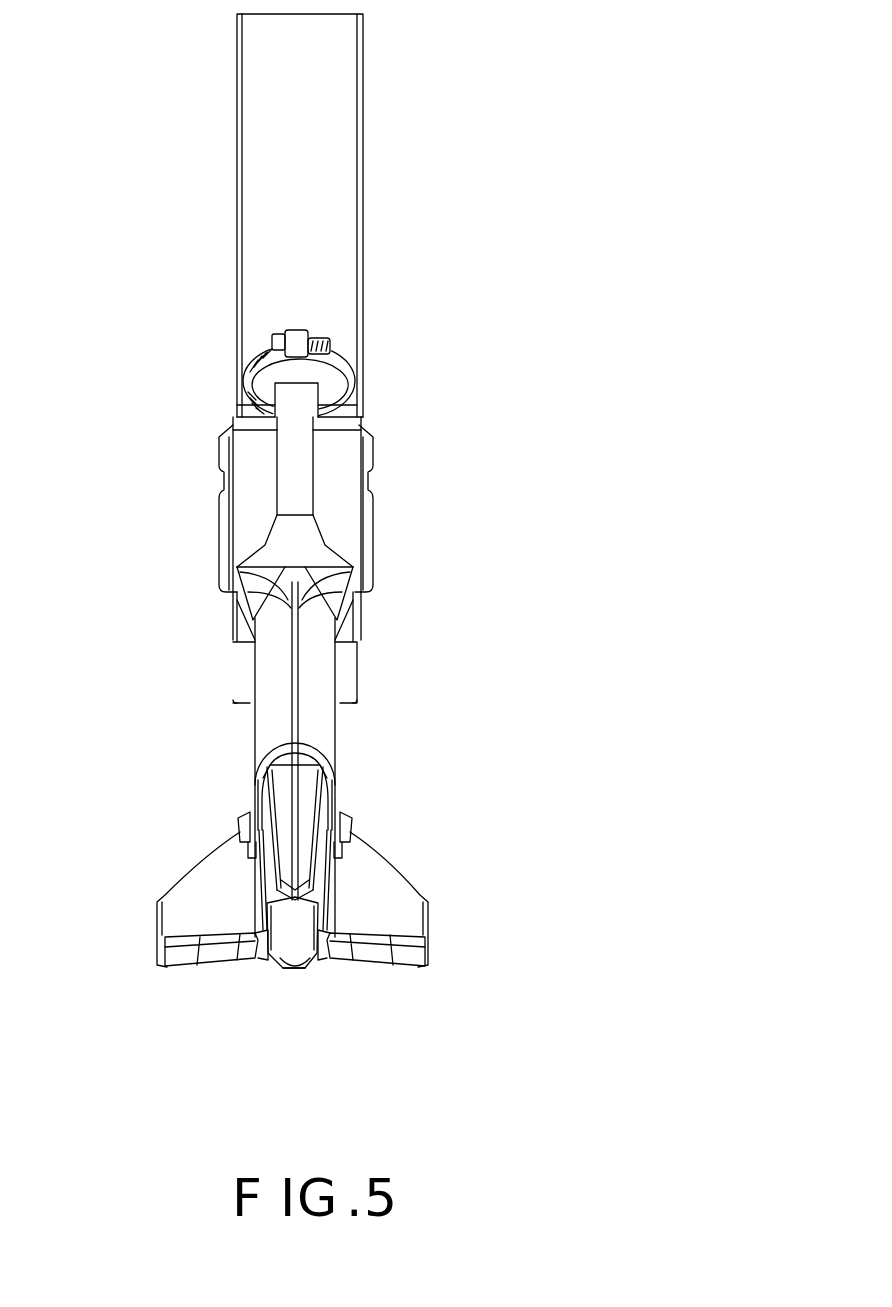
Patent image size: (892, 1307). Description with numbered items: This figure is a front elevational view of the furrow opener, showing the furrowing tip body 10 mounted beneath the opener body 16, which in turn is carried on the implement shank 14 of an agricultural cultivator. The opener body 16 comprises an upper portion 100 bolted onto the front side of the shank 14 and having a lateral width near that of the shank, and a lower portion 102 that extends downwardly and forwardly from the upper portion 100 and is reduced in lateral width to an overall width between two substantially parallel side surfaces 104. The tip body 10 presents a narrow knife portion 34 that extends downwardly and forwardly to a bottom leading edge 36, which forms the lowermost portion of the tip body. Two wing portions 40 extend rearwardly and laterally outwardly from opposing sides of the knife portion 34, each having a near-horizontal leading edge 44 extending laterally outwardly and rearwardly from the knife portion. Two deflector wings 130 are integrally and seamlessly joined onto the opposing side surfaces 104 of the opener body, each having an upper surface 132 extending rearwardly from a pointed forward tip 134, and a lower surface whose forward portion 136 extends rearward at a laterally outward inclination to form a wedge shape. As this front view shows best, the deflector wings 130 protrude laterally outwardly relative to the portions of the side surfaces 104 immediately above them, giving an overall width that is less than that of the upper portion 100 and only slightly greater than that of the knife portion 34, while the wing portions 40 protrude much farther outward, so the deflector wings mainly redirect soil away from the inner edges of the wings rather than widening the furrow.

The furrowing tip body 10 is at (672, 937).
The implement shank 14 is at (360, 158).
The opener body 16 is at (492, 508).
The knife portion 34 is at (312, 962).
The bottom leading edge 36 is at (278, 962).
The wing portion 40 is at (392, 907).
The leading edge of wing portion 44 is at (200, 967).
The upper portion 100 is at (442, 472).
The lower portion 102 is at (636, 682).
The side surfaces 104 is at (336, 680).
The deflector wing 130 is at (400, 825).
The upper surface of deflector wing 132 is at (346, 818).
The pointed forward tip 134 is at (349, 823).
The forward portion of lower surface 136 is at (351, 837).